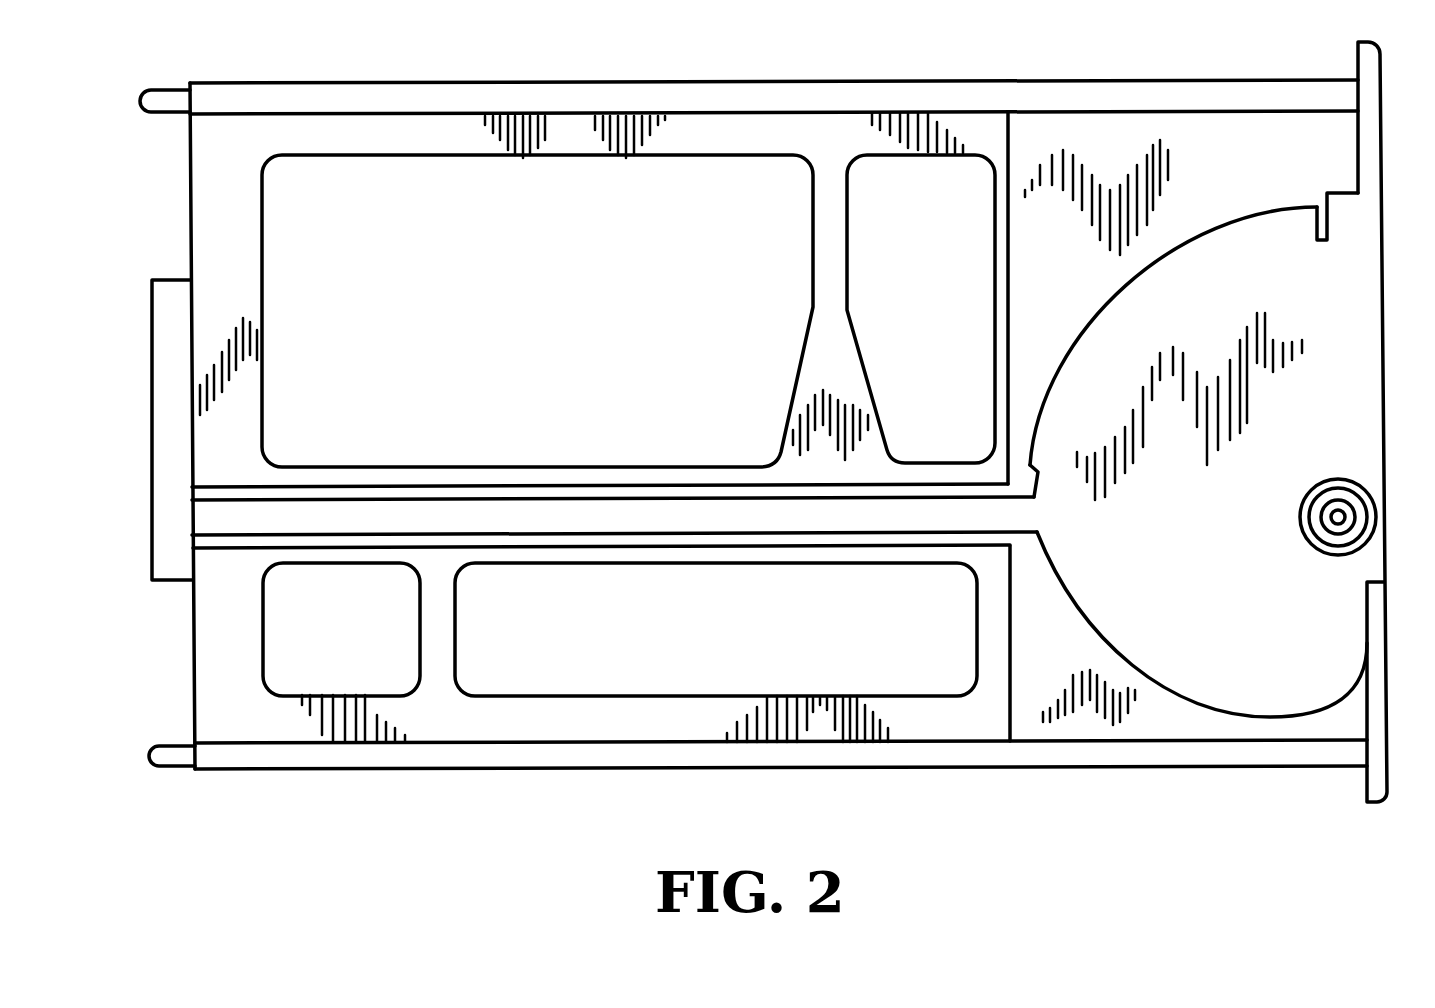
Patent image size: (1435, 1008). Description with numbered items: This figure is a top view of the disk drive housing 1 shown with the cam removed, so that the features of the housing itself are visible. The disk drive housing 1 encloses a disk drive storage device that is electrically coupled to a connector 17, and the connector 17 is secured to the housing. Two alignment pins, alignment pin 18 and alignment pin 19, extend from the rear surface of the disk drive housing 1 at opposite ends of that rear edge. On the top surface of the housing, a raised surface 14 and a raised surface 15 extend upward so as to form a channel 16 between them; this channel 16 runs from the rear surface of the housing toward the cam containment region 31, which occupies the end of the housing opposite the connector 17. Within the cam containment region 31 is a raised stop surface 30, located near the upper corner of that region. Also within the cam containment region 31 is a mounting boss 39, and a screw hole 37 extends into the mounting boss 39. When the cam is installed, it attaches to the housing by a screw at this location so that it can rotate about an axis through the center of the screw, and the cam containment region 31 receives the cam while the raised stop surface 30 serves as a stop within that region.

The disk drive housing 1 is at (968, 62).
The raised surface 14 is at (573, 486).
The raised surface 15 is at (574, 549).
The channel 16 is at (622, 523).
The connector 17 is at (152, 281).
The alignment pin 18 is at (165, 89).
The alignment pin 19 is at (175, 768).
The raised stop surface 30 is at (1311, 238).
The cam containment region 31 is at (1218, 604).
The screw hole 37 is at (1325, 519).
The mounting boss 39 is at (1345, 500).